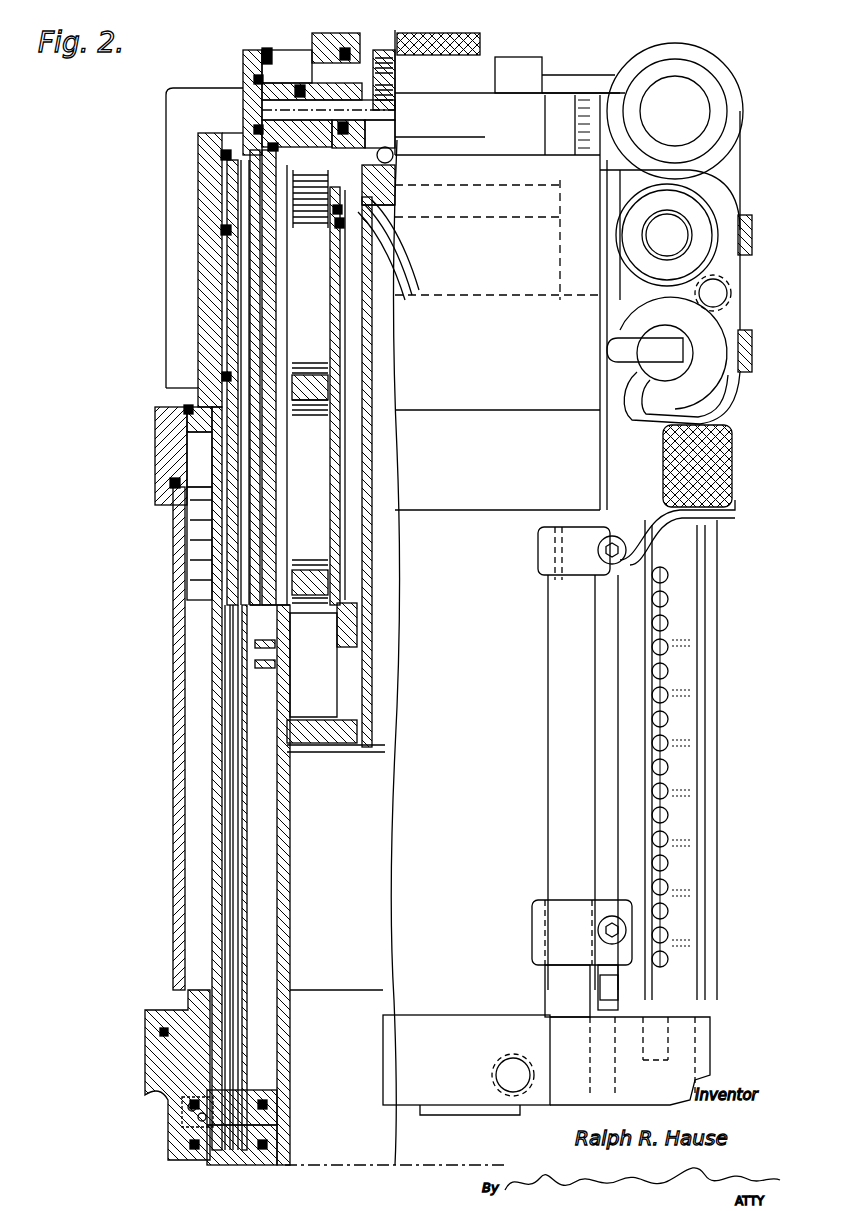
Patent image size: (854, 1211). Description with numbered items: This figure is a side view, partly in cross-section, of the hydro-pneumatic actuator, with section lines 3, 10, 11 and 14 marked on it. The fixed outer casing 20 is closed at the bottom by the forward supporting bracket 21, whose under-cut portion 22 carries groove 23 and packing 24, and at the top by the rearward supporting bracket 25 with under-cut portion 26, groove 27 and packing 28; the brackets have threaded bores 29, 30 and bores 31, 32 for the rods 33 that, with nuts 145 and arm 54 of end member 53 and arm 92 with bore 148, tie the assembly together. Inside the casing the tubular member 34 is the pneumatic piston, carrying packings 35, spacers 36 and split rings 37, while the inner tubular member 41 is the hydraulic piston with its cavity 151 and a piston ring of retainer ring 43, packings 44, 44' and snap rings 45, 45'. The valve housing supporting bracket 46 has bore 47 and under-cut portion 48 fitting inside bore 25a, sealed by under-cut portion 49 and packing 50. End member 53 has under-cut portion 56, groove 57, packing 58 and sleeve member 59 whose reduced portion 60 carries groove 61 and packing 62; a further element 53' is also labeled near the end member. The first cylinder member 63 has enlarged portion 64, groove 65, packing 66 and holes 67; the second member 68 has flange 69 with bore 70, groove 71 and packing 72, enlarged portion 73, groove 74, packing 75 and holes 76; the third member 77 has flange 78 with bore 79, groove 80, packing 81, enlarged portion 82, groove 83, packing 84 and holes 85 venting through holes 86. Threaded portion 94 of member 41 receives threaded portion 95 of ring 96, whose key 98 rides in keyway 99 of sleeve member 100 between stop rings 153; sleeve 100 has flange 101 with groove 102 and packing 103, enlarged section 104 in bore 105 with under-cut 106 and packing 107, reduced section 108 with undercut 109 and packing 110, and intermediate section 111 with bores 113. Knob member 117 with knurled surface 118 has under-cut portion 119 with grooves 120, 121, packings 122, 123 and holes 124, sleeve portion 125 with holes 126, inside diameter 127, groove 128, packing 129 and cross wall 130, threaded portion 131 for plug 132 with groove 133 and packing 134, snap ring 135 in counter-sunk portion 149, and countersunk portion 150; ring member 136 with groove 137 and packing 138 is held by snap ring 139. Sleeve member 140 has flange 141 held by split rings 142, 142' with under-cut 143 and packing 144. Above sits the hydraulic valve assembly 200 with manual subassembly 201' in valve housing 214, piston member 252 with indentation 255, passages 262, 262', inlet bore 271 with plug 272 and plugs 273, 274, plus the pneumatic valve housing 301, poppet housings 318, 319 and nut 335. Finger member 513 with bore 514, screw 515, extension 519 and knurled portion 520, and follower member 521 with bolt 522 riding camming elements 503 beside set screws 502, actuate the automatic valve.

The section line 3- 3 is at (581, 398).
The section line 10- 10 is at (571, 1082).
The section line 11- 11 is at (590, 470).
The section line 14- 14 is at (480, 110).
The outer circular casing 20 is at (174, 725).
The forward supporting bracket 21 is at (146, 1046).
The under-cut portion 22 is at (172, 1046).
The circular groove 23 is at (166, 1026).
The packing 24 is at (162, 1030).
The rearward supporting bracket 25 is at (192, 455).
The inside bore 25a is at (184, 462).
The under-cut portion 26 is at (172, 500).
The circular groove 27 is at (172, 488).
The packing 28 is at (182, 480).
The threaded bore 29 is at (513, 1058).
The threaded bore 30 is at (515, 468).
The bore 31 is at (620, 1078).
The bore 32 is at (606, 497).
The rod 33 is at (556, 735).
The tubular member 34 is at (214, 810).
The packings 35 is at (202, 536).
The spacers 36 is at (202, 566).
The split rings 37 is at (202, 590).
The tubular member 41 is at (290, 946).
The packing retainer ring 43 is at (286, 668).
The packing 44 is at (302, 691).
The packing 44' is at (304, 655).
The snap ring 45 is at (303, 706).
The snap ring 45' is at (306, 633).
The valve housing supporting bracket 46 is at (200, 276).
The concentric bore 47 is at (226, 200).
The under-cut portion 48 is at (190, 430).
The under-cut portion 49 is at (162, 415).
The packing 50 is at (186, 410).
The end member 53 is at (542, 47).
The passage 53' is at (172, 183).
The diagonally extending arm 54 is at (172, 110).
The under-cut portion 56 is at (200, 172).
The circular groove 57 is at (270, 140).
The packing 58 is at (226, 155).
The sleeve member 59 is at (286, 326).
The reduced portion 60 is at (290, 540).
The circular groove 61 is at (232, 616).
The packing 62 is at (288, 586).
The first cylindrical tubular member 63 is at (290, 870).
The enlarged portion 64 is at (232, 220).
The circular groove 65 is at (226, 230).
The packing 66 is at (226, 240).
The radially spaced holes 67 is at (292, 236).
The second cylindrical tubular member 68 is at (224, 906).
The inwardly extending flange 69 is at (186, 1118).
The bore 70 is at (272, 1096).
The circular groove 71 is at (266, 1120).
The packing 72 is at (266, 1106).
The enlarged portion 73 is at (258, 312).
The circular groove 74 is at (232, 290).
The packing 75 is at (226, 310).
The radially spaced holes 76 is at (256, 296).
The third cylindrical tubular member 77 is at (222, 940).
The inwardly extending flange 78 is at (242, 1160).
The bore 79 is at (272, 1138).
The circular groove 80 is at (276, 1156).
The packing 81 is at (266, 1148).
The enlarged portion 82 is at (290, 426).
The circular groove 83 is at (224, 370).
The packing 84 is at (226, 378).
The radially spaced holes 85 is at (262, 350).
The radially spaced holes 86 is at (206, 350).
The diagonally extending arm 92 is at (710, 1056).
The internally threaded portion 94 is at (352, 586).
The externally threaded portion 95 is at (330, 410).
The ring 96 is at (326, 400).
The key 98 is at (330, 386).
The keyway 99 is at (300, 520).
The tubular sleeve member 100 is at (340, 546).
The inwardly extending flange member 101 is at (358, 626).
The circular groove 102 is at (362, 656).
The packing 103 is at (356, 636).
The enlarged section 104 is at (262, 142).
The bore 105 is at (257, 86).
The under-cut portion 106 is at (254, 122).
The packing 107 is at (272, 152).
The reduced section 108 is at (278, 50).
The undercut portion 109 is at (285, 62).
The packing 110 is at (300, 84).
The intermediate section 111 is at (243, 90).
The bores 113 is at (326, 48).
The knob member 117 is at (486, 36).
The knurled surface 118 is at (472, 60).
The under-cut portion 119 is at (396, 72).
The circular groove 120 is at (396, 82).
The circular groove 121 is at (396, 178).
The packing 122 is at (396, 100).
The packing 123 is at (396, 146).
The radially spaced holes 124 is at (398, 120).
The sleeve portion 125 is at (376, 246).
The radially spaced holes 126 is at (382, 216).
The inside diametric dimension 127 is at (392, 232).
The circular groove 128 is at (381, 266).
The packing 129 is at (384, 292).
The cross wall 130 is at (396, 190).
The threaded portion 131 is at (402, 78).
The threaded plug member 132 is at (398, 62).
The circular groove 133 is at (382, 56).
The packing 134 is at (374, 50).
The split ring 135 is at (350, 52).
The ring member 136 is at (262, 52).
The circular groove 137 is at (252, 62).
The packing 138 is at (250, 72).
The snap-on ring 139 is at (268, 58).
The sleeve member 140 is at (368, 480).
The flange portion 141 is at (380, 753).
The split ring 142 is at (387, 713).
The split ring 142' is at (411, 741).
The under-cut portion 143 is at (318, 753).
The packing 144 is at (322, 749).
The nut 145 is at (522, 1115).
The bore 148 is at (396, 58).
The counter-sunk portion 149 is at (258, 50).
The countersunk portion 150 is at (320, 62).
The cavity 151 is at (366, 1040).
The stop ring 153 is at (356, 612).
The hydraulic valve assembly 200 is at (739, 312).
The manual subassembly 201' is at (729, 216).
The valve housing 214 is at (718, 206).
The piston member 252 is at (730, 386).
The indentation 255 is at (724, 400).
The communicating passage 262 is at (521, 278).
The communicating passage 262' is at (533, 238).
The threaded bore 271 is at (729, 284).
The threaded plug member 272 is at (729, 296).
The threaded plug member 273 is at (746, 242).
The threaded plug member 274 is at (746, 346).
The pneumatic valve housing 301 is at (712, 694).
The poppet valve housing 318 is at (714, 578).
The poppet valve housing 319 is at (714, 924).
The nut 335 is at (714, 1000).
The set screw 502 is at (698, 736).
The camming element 503 is at (668, 830).
The finger member 513 is at (716, 516).
The bore 514 is at (538, 556).
The machine screw 515 is at (610, 553).
The extension 519 is at (607, 350).
The knurled portion 520 is at (732, 465).
The follower member 521 is at (532, 916).
The bolt 522 is at (600, 931).